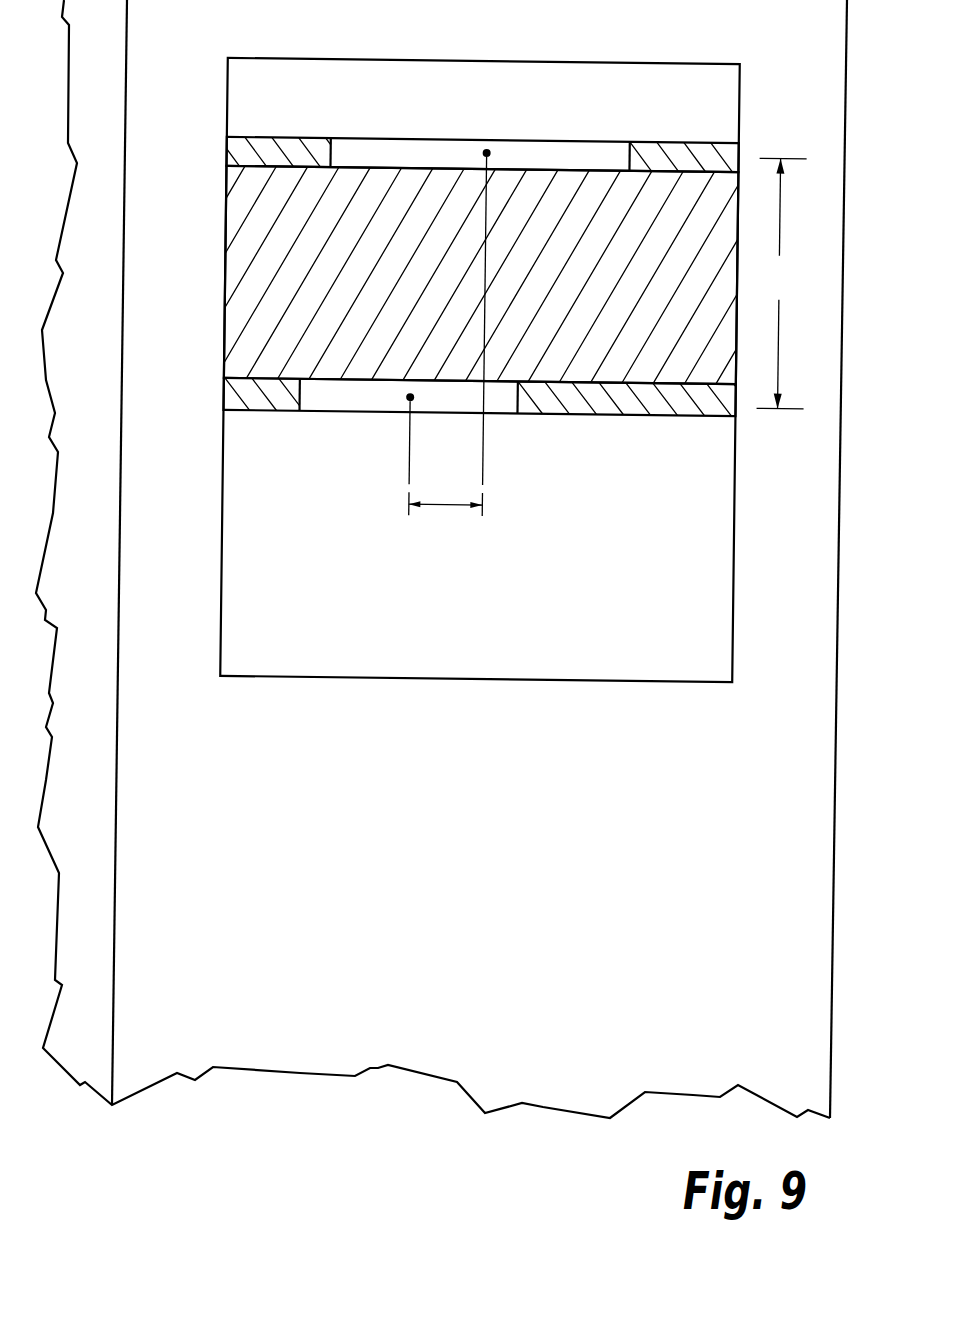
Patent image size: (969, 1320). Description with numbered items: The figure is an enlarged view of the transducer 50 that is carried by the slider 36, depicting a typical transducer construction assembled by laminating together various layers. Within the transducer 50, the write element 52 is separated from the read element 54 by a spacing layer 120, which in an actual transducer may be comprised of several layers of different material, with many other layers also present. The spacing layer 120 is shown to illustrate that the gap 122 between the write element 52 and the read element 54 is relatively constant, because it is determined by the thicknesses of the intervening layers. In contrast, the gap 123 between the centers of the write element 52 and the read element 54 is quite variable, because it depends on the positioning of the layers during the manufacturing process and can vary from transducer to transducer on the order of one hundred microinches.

The slider 36 is at (832, 1020).
The transducer 50 is at (395, 677).
The write element 52 is at (407, 138).
The read element 54 is at (410, 414).
The spacing layer 120 is at (227, 293).
The gap 122 is at (782, 283).
The gap 123 is at (440, 508).